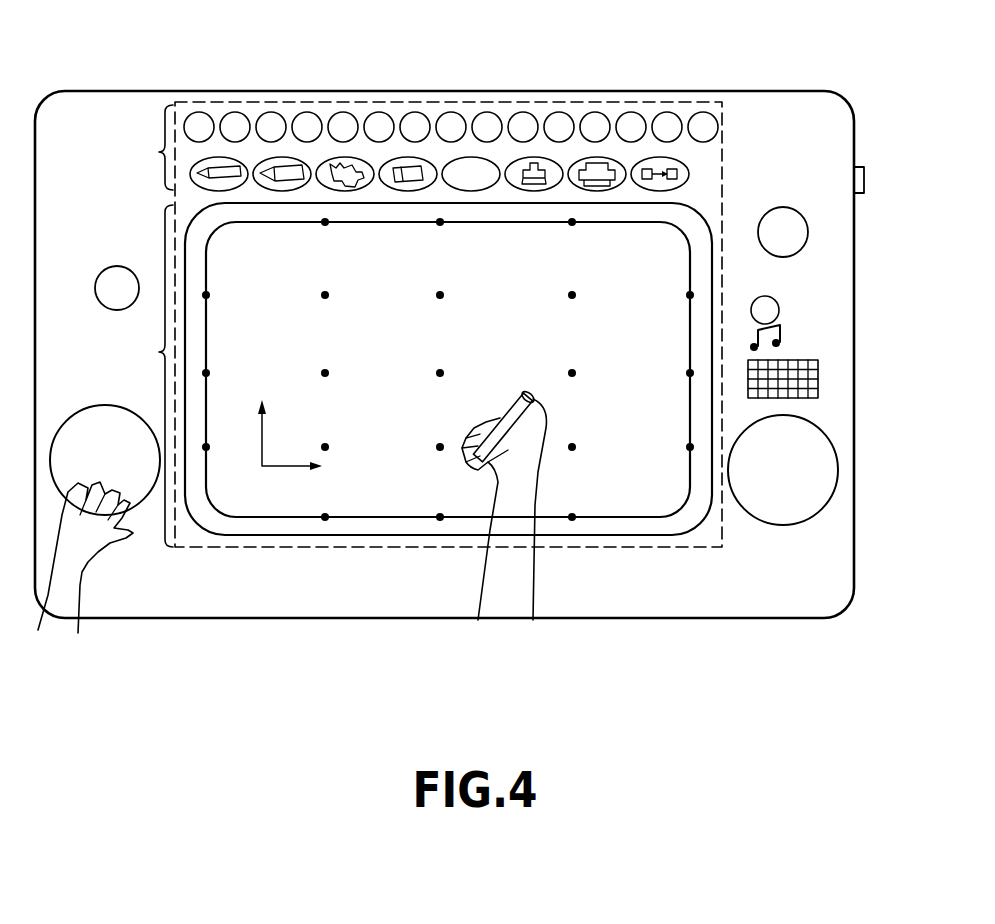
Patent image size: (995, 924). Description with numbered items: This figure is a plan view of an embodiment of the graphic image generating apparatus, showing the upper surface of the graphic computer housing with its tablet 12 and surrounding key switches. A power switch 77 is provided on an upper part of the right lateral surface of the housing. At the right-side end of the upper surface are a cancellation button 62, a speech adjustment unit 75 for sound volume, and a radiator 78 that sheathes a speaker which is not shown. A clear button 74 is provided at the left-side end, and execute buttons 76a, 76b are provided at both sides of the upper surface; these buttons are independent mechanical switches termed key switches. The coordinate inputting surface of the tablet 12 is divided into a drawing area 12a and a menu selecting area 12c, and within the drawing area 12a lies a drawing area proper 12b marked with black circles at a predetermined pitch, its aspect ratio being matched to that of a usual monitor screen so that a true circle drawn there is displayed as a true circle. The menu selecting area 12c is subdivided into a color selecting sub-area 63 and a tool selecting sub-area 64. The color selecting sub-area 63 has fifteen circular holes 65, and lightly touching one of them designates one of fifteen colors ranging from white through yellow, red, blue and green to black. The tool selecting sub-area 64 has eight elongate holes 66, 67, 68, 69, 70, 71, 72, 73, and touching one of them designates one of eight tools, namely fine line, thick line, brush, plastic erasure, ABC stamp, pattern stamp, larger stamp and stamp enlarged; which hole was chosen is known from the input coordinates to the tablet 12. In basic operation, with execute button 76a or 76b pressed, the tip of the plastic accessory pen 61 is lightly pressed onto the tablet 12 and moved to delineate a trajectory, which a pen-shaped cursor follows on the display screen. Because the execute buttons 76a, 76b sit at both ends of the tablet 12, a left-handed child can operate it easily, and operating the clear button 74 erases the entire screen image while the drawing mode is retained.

The tablet 12 is at (647, 547).
The drawing area 12a is at (159, 352).
The drawing area proper 12b is at (393, 517).
The menu selecting area 12c is at (159, 152).
The accessory pen 61 is at (538, 397).
The cancellation button 62 is at (808, 232).
The color selecting sub-area 63 is at (506, 90).
The tool selecting sub-area 64 is at (542, 110).
The circular holes 65 is at (708, 124).
The elongate hole 66 is at (216, 158).
The elongate hole 67 is at (286, 158).
The elongate hole 68 is at (357, 158).
The elongate hole 69 is at (406, 158).
The elongate hole 70 is at (467, 158).
The elongate hole 71 is at (540, 158).
The elongate hole 72 is at (604, 158).
The elongate hole 73 is at (676, 158).
The clear button 74 is at (108, 270).
The speech adjustment unit 75 is at (800, 297).
The execute button 76a is at (142, 508).
The execute button 76b is at (790, 527).
The power switch 77 is at (866, 180).
The radiator 78 is at (820, 375).